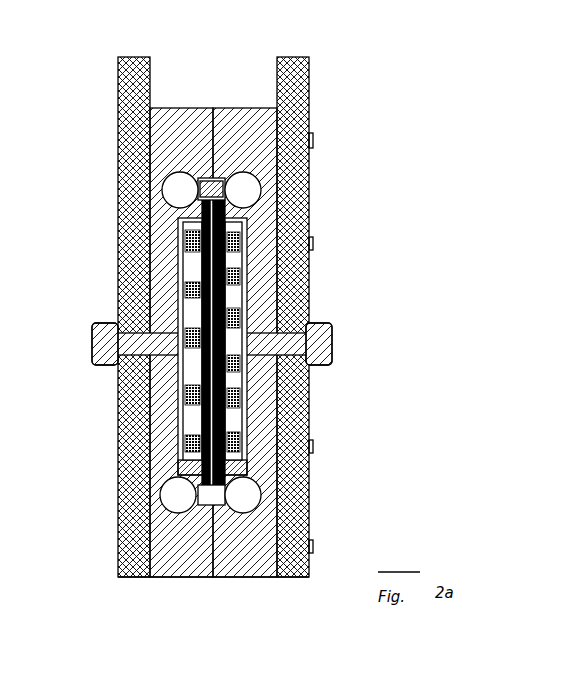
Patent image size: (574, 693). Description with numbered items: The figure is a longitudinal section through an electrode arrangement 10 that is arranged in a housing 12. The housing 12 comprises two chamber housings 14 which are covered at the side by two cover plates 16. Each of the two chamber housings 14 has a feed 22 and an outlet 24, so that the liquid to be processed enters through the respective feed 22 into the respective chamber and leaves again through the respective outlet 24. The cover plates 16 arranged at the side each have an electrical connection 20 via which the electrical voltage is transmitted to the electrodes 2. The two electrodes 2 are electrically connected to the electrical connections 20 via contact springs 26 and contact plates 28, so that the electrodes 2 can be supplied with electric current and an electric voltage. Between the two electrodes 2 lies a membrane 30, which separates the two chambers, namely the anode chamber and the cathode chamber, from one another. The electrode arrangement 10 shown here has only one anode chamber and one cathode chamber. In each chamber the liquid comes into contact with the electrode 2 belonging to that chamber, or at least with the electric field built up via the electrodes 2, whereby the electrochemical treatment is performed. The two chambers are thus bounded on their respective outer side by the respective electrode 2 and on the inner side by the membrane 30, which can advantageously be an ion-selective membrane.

The electrode 2 is at (190, 213).
The electrode arrangement 10 is at (415, 105).
The housing 12 is at (141, 580).
The chamber housing 14 is at (173, 125).
The cover plate 16 is at (131, 95).
The electrical connection 20 is at (92, 343).
The feed 22 is at (172, 190).
The outlet 24 is at (172, 496).
The contact spring 26 is at (160, 420).
The contact plate 28 is at (118, 388).
The membrane 30 is at (205, 196).